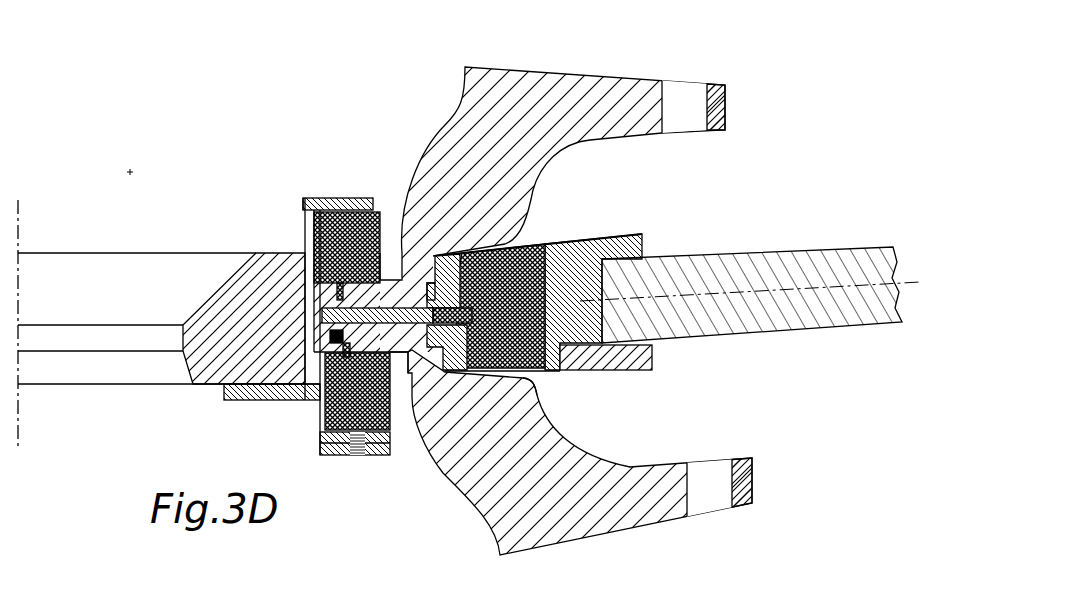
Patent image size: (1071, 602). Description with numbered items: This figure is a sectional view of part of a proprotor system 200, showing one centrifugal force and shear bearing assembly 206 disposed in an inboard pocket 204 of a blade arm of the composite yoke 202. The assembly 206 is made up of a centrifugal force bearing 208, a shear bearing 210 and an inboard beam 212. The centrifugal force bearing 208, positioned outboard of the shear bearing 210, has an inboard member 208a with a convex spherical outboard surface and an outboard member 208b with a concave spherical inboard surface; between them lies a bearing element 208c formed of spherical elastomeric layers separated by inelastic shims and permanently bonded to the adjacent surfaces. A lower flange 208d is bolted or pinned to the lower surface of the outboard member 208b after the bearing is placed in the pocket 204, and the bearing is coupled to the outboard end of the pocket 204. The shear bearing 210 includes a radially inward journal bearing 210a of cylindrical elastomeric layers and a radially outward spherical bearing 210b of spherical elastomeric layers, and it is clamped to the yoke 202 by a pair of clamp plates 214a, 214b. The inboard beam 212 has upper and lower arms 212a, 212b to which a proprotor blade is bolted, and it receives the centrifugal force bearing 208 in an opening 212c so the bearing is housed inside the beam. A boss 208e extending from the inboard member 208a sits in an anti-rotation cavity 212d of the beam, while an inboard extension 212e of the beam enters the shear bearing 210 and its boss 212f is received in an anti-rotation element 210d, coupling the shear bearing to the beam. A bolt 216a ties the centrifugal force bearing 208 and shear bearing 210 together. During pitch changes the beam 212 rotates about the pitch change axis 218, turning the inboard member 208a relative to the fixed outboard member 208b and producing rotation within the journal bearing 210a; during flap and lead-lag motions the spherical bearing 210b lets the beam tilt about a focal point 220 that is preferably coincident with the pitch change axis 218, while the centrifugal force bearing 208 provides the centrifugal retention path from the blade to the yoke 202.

The proprotor system 200 is at (300, 110).
The yoke 202 is at (72, 262).
The inboard pocket 204 is at (393, 267).
The centrifugal force and shear bearing assembly 206 is at (590, 62).
The centrifugal force bearing 208 is at (608, 228).
The inboard member 208a is at (452, 373).
The outboard member 208b is at (643, 238).
The bearing element 208c is at (548, 247).
The lower flange 208d is at (610, 362).
The boss 208e is at (438, 285).
The shear bearing 210 is at (303, 220).
The journal bearing 210a is at (306, 250).
The spherical bearing 210b is at (345, 197).
The anti-rotation element 210d is at (328, 293).
The inboard beam 212 is at (636, 540).
The upper arm 212a is at (725, 105).
The lower arm 212b is at (752, 480).
The opening 212c is at (509, 383).
The anti-rotation cavity 212d is at (398, 373).
The inboard extension 212e is at (330, 407).
The boss 212f is at (338, 337).
The clamp plate 214a is at (305, 200).
The clamp plate 214b is at (222, 392).
The bolt 216a is at (420, 282).
The pitch change axis 218 is at (830, 285).
The focal point 220 is at (328, 320).